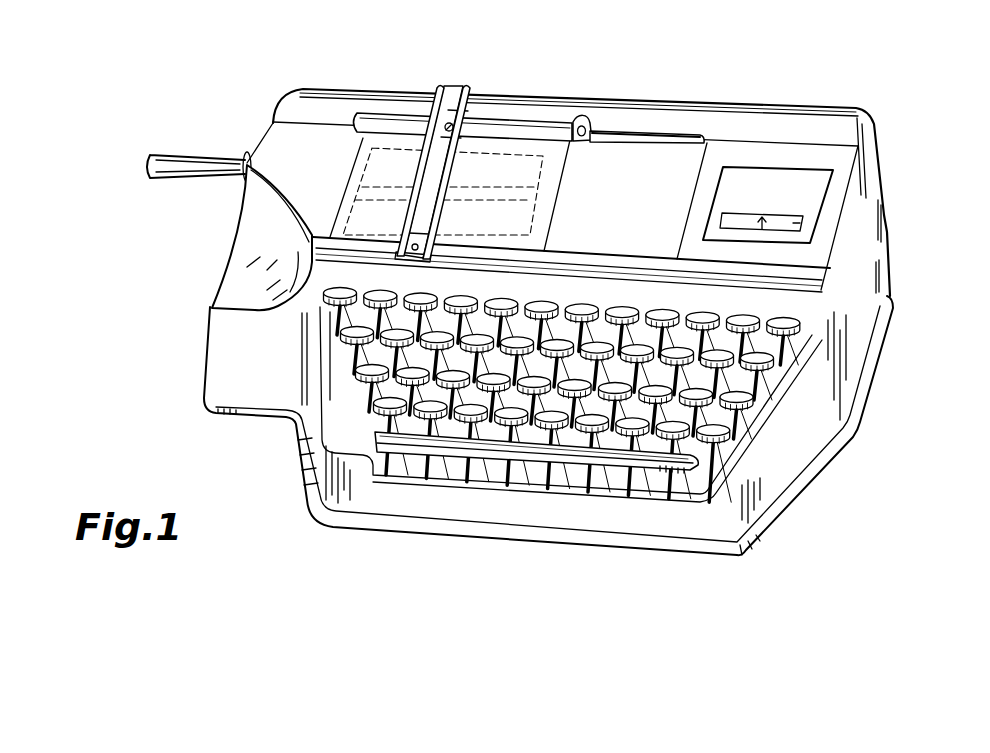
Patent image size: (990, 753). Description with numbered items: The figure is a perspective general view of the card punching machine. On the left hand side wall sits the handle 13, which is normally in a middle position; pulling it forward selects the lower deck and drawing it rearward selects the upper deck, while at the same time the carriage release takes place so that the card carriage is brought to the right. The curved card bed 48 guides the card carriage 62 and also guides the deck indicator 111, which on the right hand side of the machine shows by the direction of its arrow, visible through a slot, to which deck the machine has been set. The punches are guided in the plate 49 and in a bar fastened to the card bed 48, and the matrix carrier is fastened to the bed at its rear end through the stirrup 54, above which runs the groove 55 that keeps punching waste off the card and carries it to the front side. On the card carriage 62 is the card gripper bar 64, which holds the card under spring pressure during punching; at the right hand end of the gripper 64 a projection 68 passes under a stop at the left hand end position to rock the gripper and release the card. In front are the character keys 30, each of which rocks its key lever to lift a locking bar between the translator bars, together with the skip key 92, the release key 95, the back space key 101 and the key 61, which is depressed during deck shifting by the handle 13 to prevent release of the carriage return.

The handle 13 is at (163, 165).
The plate 49 is at (290, 153).
The card bed 48 is at (275, 213).
The stirrup 54 is at (452, 107).
The groove 55 is at (465, 128).
The card gripper bar 64 is at (550, 127).
The projection 68 is at (581, 120).
The card carriage 62 is at (663, 135).
The deck indicator 111 is at (793, 225).
The back space key 101 is at (800, 323).
The release key 95 is at (762, 358).
The key 61 is at (722, 427).
The key 30 is at (588, 427).
The skip key 92 is at (647, 460).